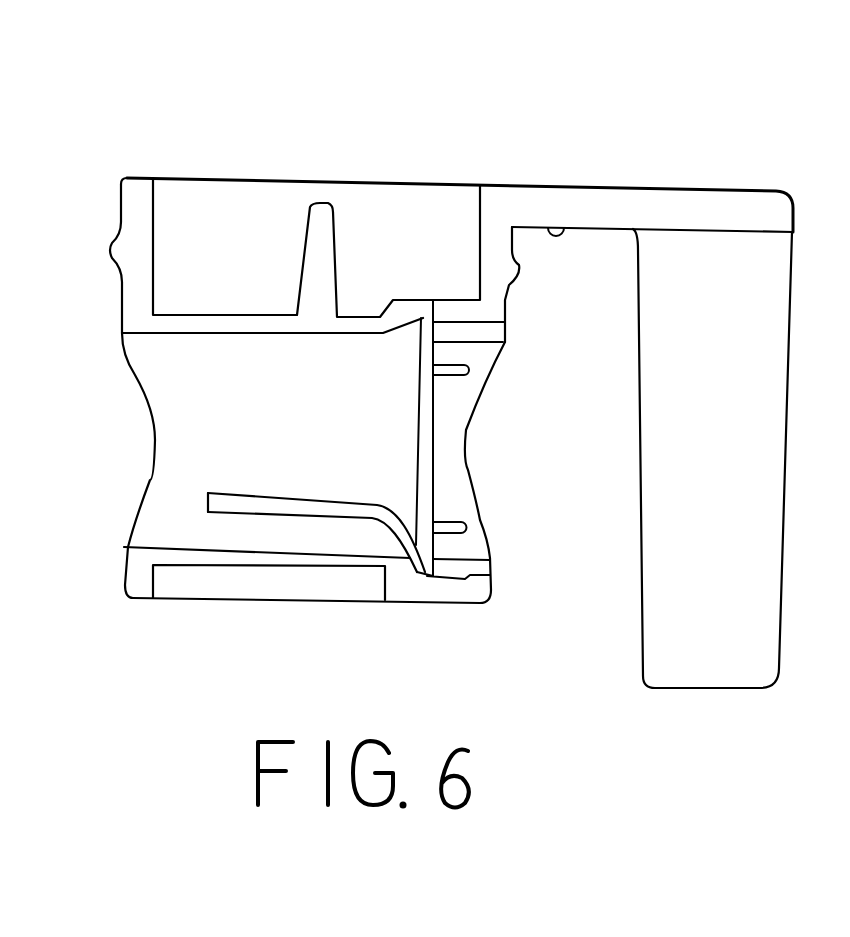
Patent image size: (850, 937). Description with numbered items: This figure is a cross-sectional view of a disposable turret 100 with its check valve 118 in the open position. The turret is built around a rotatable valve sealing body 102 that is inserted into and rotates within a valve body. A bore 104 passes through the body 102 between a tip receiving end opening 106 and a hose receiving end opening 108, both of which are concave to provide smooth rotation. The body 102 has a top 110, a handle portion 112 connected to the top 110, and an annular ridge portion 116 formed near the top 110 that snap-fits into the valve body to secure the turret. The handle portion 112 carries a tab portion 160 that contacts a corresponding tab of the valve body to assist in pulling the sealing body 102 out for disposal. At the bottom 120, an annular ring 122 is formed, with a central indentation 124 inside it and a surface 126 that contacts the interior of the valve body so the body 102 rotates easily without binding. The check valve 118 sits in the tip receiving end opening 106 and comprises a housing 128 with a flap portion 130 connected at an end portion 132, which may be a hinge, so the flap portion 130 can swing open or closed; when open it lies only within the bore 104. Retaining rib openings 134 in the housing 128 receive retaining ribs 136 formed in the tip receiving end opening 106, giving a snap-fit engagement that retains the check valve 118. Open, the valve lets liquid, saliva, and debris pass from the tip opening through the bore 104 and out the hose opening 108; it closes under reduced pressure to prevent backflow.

The disposable turret 100 is at (420, 100).
The rotatable valve sealing body 102 is at (497, 641).
The bore 104 is at (180, 434).
The tip receiving end opening 106 is at (468, 459).
The hose receiving end opening 108 is at (135, 372).
The top 110 is at (270, 178).
The handle portion 112 is at (770, 446).
The annular ridge portion 116 is at (110, 252).
The check valve 118 is at (370, 443).
The bottom 120 is at (268, 622).
The annular ring 122 is at (105, 612).
The central indentation 124 is at (200, 580).
The surface 126 is at (136, 598).
The housing 128 is at (453, 405).
The flap portion 130 is at (258, 505).
The end portion 132 is at (423, 578).
The retaining rib openings 134 is at (470, 372).
The retaining ribs 136 is at (472, 362).
The tab portion 160 is at (559, 236).